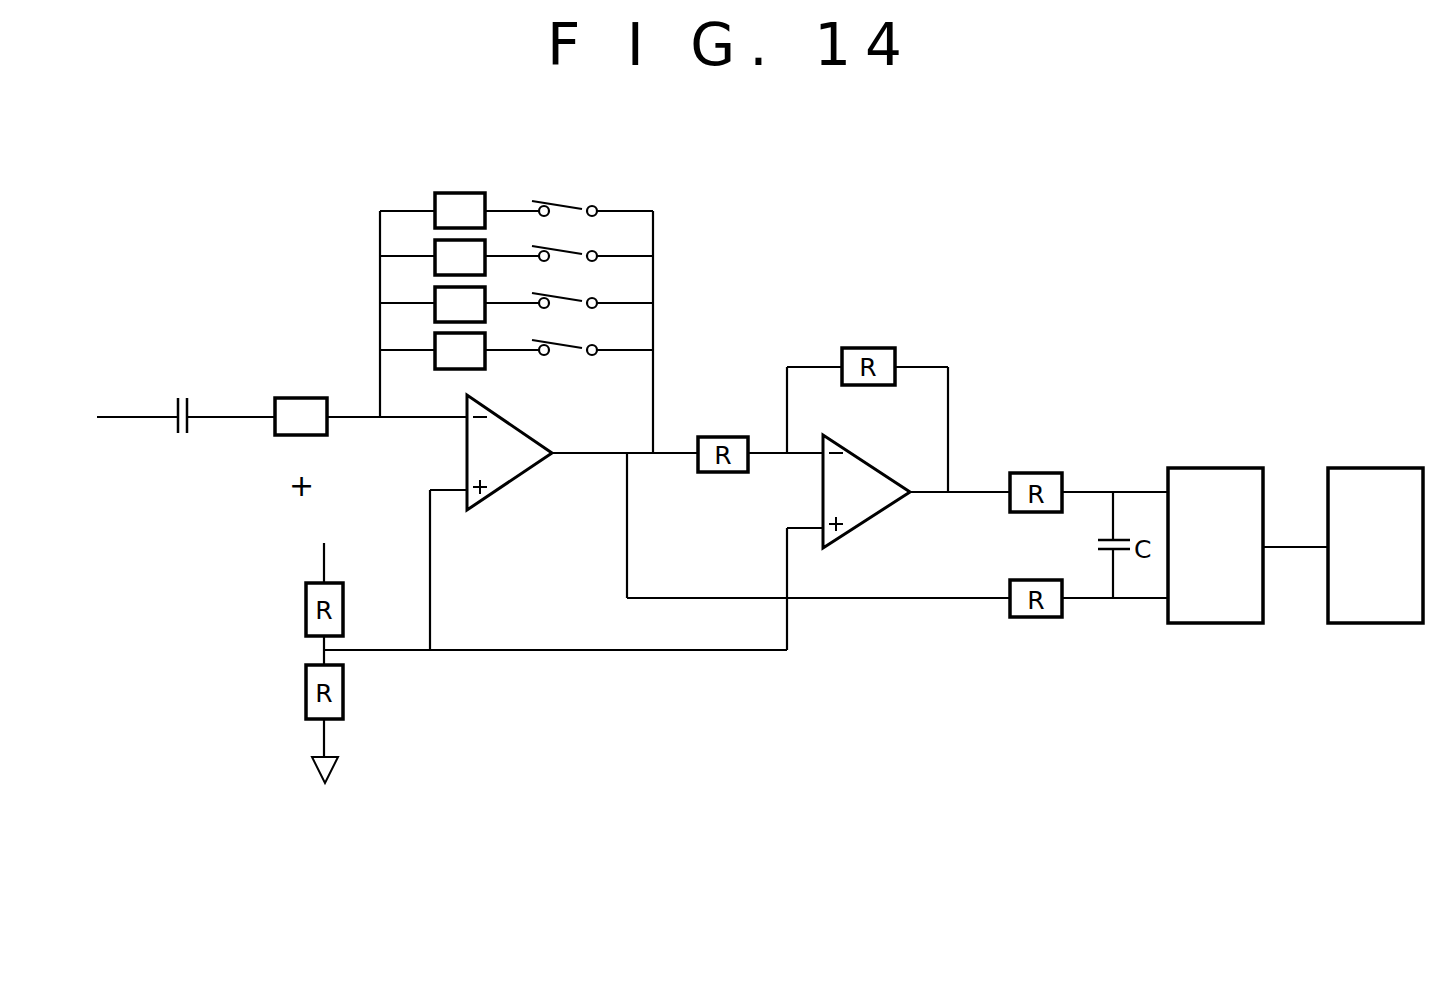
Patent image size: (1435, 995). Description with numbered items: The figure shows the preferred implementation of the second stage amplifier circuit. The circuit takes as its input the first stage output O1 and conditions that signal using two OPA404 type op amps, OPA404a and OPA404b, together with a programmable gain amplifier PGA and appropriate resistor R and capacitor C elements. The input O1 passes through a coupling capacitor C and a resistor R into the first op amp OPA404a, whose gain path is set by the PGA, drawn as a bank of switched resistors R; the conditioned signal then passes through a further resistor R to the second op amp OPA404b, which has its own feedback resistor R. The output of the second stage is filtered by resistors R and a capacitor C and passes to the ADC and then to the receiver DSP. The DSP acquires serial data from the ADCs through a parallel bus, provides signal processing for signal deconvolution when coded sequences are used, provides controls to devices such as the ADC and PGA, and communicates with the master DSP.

The first stage output O1 is at (137, 398).
The capacitor element C is at (177, 434).
The resistor element R is at (301, 416).
The programmable gain amplifier PGA is at (516, 295).
The OPA404 type op amp OPA404a is at (541, 458).
The OPA404 type op amp OPA404b is at (894, 501).
The analog-to-digital converter ADC is at (1215, 545).
The receiver DSP is at (1375, 545).